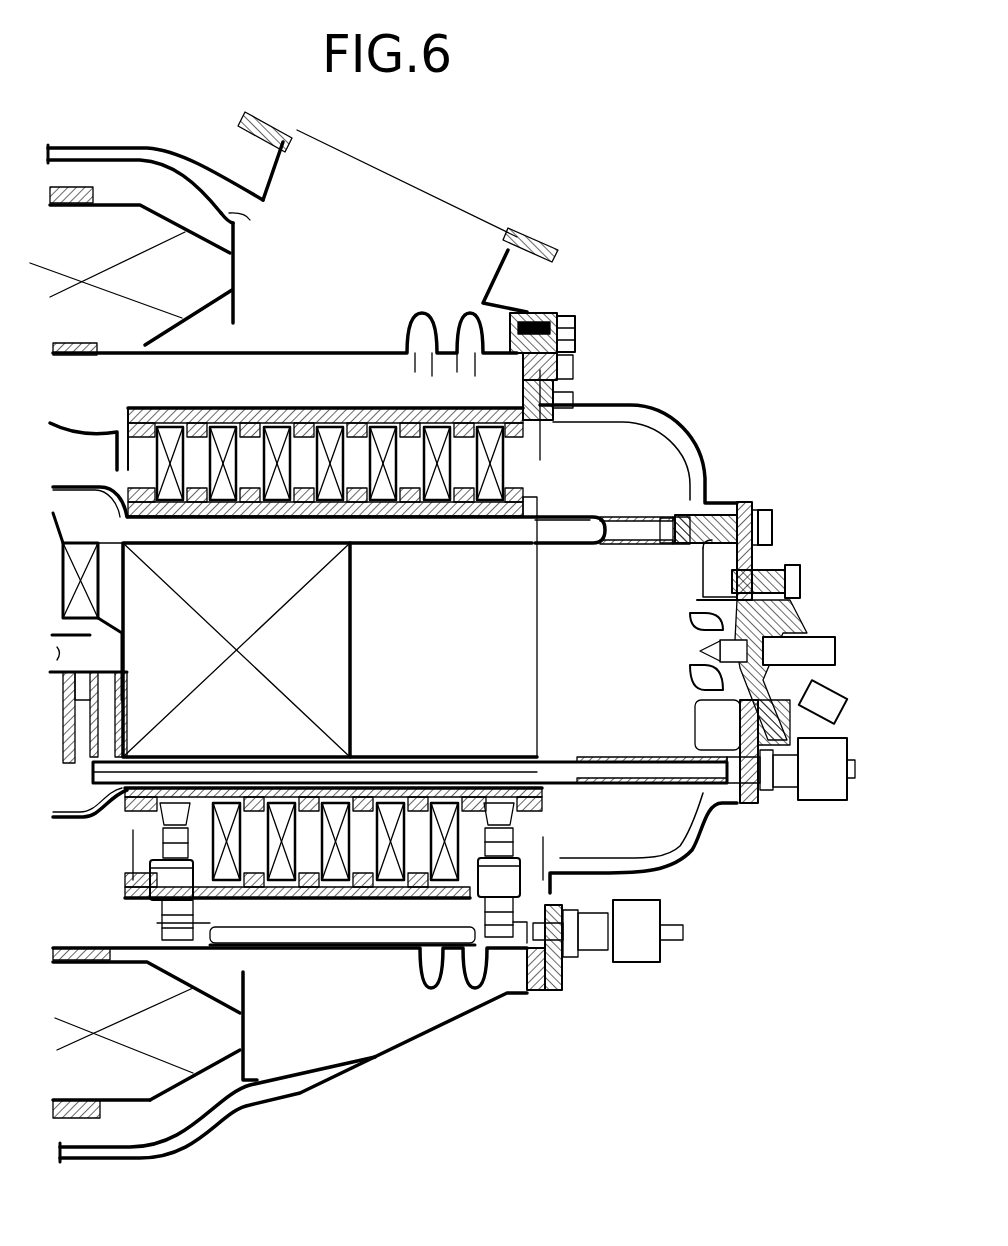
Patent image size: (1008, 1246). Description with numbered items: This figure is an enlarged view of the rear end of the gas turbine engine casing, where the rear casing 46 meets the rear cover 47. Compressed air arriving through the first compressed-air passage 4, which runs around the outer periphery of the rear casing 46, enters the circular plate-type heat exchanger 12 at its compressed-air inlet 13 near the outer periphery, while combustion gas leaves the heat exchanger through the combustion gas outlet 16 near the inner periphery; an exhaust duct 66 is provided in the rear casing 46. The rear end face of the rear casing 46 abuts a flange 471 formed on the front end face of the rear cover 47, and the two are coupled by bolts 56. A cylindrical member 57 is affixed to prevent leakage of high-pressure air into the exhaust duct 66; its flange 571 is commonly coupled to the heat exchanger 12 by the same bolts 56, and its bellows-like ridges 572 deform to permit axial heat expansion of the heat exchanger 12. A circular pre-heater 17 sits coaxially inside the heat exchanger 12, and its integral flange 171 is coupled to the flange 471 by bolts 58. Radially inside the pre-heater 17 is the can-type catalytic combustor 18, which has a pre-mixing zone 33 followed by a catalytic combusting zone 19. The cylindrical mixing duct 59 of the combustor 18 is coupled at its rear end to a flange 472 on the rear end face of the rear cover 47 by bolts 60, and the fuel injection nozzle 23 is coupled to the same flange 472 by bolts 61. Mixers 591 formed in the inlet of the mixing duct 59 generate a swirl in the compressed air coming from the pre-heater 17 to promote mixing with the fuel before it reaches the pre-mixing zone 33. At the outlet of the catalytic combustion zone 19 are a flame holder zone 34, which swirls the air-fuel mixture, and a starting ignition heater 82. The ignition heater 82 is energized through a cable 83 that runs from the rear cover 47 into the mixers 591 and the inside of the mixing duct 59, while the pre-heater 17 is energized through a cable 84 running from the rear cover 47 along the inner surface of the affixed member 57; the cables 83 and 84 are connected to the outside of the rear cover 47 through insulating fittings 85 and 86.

The first compressed-air passage 4 is at (75, 175).
The rear casing 46 is at (113, 143).
The plate-type heat exchanger 12 is at (177, 205).
The compressed-air inlet 13 is at (250, 220).
The combustion gas outlet 16 is at (200, 310).
The exhaust duct 66 is at (403, 178).
The cylindrical member 57 is at (332, 347).
The flange of cylindrical member 571 is at (523, 313).
The bellows-like ridges 572 is at (430, 313).
The bolts 56 is at (572, 333).
The bolts 58 is at (570, 367).
The pre-heater 17 is at (308, 405).
The flange of pre-heater 171 is at (520, 390).
The flange of rear cover 471 is at (572, 400).
The rear cover 47 is at (665, 405).
The mixing duct 59 is at (557, 513).
The flange of rear cover 472 is at (740, 502).
The bolts 60 is at (766, 510).
The bolts 61 is at (792, 563).
The mixers 591 is at (618, 537).
The catalytic combusting zone 19 is at (330, 640).
The pre-mixing zone 33 is at (555, 661).
The flame holder zone 34 is at (90, 582).
The starting ignition heater 82 is at (63, 663).
The cable 83 is at (437, 773).
The insulating fitting 85 is at (825, 789).
The fuel injection nozzle 23 is at (812, 615).
The can-type catalytic combustor 18 is at (122, 830).
The cable 84 is at (357, 947).
The insulating fitting 86 is at (630, 950).